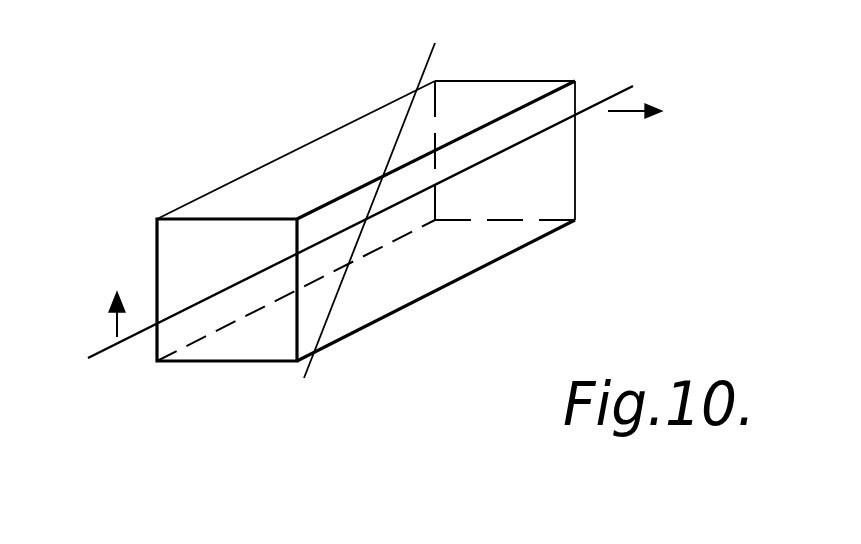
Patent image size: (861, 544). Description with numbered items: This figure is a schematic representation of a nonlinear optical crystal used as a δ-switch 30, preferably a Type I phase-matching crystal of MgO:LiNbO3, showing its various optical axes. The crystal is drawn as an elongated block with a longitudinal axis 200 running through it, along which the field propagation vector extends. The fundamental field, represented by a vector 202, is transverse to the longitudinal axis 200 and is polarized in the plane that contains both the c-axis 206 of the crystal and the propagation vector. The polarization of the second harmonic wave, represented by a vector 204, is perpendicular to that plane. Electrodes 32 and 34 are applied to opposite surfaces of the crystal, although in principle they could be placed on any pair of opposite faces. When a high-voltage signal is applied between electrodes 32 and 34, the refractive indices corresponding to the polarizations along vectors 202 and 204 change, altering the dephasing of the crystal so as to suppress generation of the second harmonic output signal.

The δ-switch 30 is at (228, 393).
The electrode 32 is at (427, 268).
The electrode 34 is at (287, 177).
The longitudinal axis 200 is at (113, 347).
The vector 202 is at (112, 321).
The vector 204 is at (620, 112).
The c-axis 206 is at (430, 68).